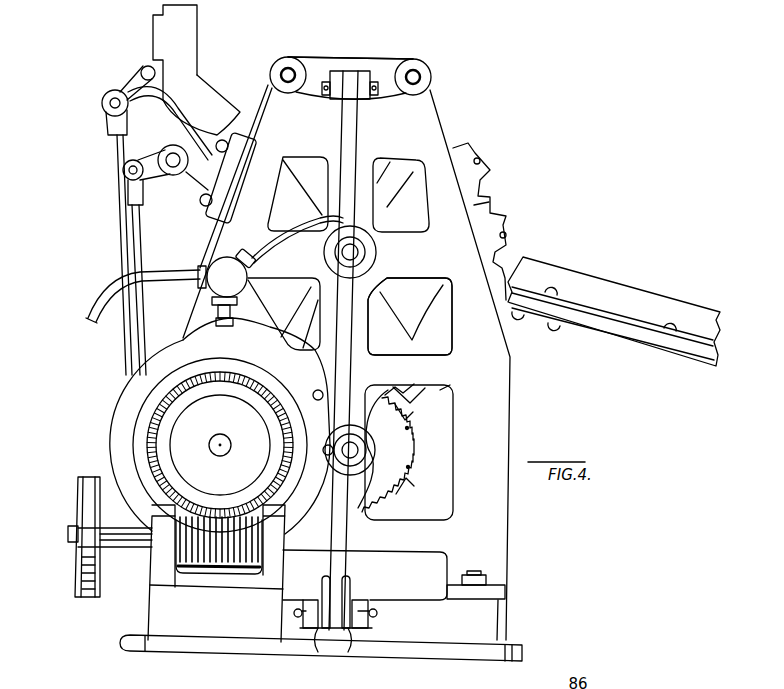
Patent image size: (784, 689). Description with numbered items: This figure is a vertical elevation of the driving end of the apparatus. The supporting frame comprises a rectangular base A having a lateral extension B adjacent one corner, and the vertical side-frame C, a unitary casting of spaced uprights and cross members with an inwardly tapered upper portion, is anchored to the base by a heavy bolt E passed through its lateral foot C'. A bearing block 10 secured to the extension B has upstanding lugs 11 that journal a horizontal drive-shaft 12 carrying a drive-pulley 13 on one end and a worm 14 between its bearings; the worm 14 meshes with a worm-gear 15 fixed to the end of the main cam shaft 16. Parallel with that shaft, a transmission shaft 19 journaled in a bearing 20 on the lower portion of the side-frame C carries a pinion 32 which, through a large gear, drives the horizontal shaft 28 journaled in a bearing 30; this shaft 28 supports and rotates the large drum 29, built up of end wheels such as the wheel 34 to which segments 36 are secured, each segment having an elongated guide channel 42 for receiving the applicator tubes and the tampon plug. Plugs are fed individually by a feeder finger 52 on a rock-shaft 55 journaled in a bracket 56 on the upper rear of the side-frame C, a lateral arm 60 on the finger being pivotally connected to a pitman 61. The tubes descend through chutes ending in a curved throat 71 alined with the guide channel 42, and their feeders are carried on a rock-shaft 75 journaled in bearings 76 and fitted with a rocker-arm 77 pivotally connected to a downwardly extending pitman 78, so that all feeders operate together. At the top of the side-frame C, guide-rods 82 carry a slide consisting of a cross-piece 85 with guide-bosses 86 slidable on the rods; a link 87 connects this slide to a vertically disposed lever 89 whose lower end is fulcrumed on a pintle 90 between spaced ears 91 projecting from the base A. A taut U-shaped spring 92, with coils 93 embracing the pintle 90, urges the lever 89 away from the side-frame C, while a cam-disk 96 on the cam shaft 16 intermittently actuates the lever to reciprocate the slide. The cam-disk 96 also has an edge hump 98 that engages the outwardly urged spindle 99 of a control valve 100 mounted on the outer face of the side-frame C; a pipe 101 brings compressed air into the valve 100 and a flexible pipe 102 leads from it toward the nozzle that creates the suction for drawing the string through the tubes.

The bearing block 10 is at (197, 588).
The lugs 11 is at (156, 568).
The drive-shaft 12 is at (70, 536).
The drive-pulley 13 is at (78, 490).
The worm 14 is at (236, 573).
The worm-gear 15 is at (170, 413).
The main actuating or cam shaft 16 is at (228, 436).
The transmission shaft 19 is at (352, 450).
The bearing 20 is at (364, 460).
The horizontal shaft 28 is at (357, 248).
The drum 29 is at (499, 198).
The bearing 30 is at (374, 257).
The pinion 32 is at (410, 450).
The end wheel 34 is at (383, 322).
The segments 36 is at (493, 232).
The guide channel 42 is at (512, 257).
The feeder finger 52 is at (145, 135).
The rock-shaft 55 is at (173, 168).
The bracket 56 is at (240, 155).
The lateral arm 60 is at (130, 172).
The pitman 61 is at (136, 246).
The curved throat 71 is at (200, 100).
The rock-shaft 75 is at (143, 70).
The bearings 76 is at (157, 36).
The rocker-arm 77 is at (125, 93).
The pitman 78 is at (118, 220).
The guide-rods 82 is at (289, 74).
The cross-piece 85 is at (392, 70).
The guide-bosses 86 is at (296, 72).
The link 87 is at (340, 82).
The lever 89 is at (352, 142).
The pintle 90 is at (375, 610).
The ears 91 is at (305, 627).
The spring 92 is at (348, 586).
The coils 93 is at (348, 632).
The cam-disk 96 is at (118, 420).
The edge hump 98 is at (212, 328).
The spindle 99 is at (226, 322).
The control valve 100 is at (225, 265).
The pipe 101 is at (92, 310).
The flexible pipe 102 is at (280, 240).
The base A is at (400, 648).
The lateral extension B is at (217, 637).
The side-frame C is at (362, 348).
The lateral foot C' is at (499, 604).
The bolt E is at (480, 572).